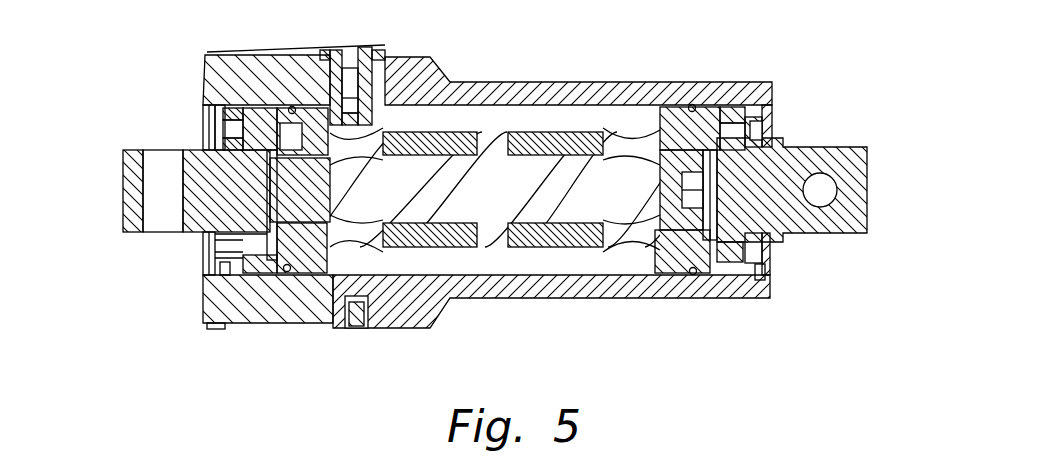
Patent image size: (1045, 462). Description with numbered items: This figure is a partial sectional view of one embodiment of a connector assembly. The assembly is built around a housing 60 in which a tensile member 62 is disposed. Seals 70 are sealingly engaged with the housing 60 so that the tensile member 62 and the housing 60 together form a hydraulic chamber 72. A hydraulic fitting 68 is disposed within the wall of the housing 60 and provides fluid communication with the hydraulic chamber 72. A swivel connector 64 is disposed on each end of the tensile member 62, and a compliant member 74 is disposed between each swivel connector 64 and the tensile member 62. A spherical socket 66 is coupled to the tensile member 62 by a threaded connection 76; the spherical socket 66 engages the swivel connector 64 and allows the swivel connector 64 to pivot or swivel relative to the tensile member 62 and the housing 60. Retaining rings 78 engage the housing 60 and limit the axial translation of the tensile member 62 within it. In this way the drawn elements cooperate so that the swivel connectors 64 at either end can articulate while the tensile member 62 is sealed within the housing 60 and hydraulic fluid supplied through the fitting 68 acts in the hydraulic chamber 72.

The housing 60 is at (502, 92).
The tensile member 62 is at (562, 140).
The swivel connector 64 is at (133, 190).
The spherical socket 66 is at (237, 135).
The hydraulic fitting 68 is at (397, 66).
The seal 70 is at (692, 105).
The hydraulic chamber 72 is at (493, 256).
The compliant member 74 is at (270, 241).
The threaded connection 76 is at (252, 258).
The retaining ring 78 is at (223, 268).